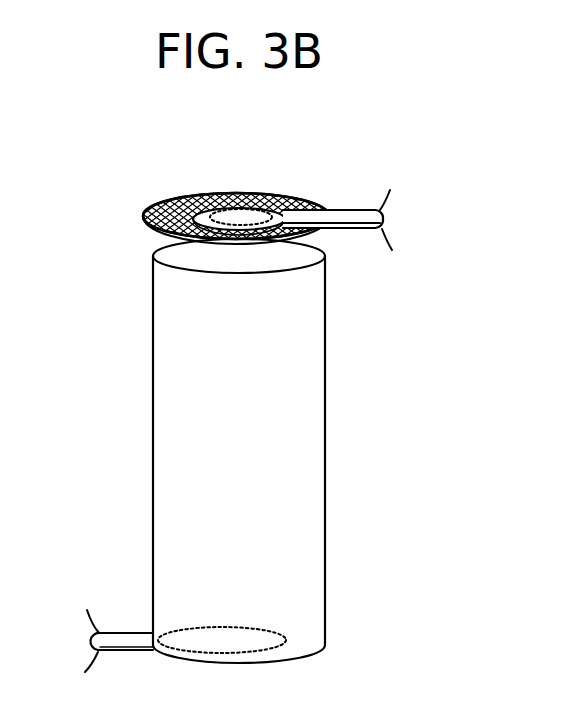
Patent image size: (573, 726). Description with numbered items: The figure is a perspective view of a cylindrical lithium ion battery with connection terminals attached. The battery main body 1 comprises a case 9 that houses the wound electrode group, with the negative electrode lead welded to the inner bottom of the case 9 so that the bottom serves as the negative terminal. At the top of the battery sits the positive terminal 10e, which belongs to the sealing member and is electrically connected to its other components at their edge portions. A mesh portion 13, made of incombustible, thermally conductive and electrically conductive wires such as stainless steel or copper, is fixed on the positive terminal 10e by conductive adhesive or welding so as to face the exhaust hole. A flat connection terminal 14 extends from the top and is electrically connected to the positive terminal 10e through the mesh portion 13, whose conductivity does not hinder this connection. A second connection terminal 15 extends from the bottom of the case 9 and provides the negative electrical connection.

The battery main body 1 is at (240, 398).
The case 9 is at (290, 510).
The positive terminal 10e is at (227, 252).
The mesh portion 13 is at (247, 193).
The connection terminal 14 is at (353, 210).
The connection terminal 15 is at (133, 638).